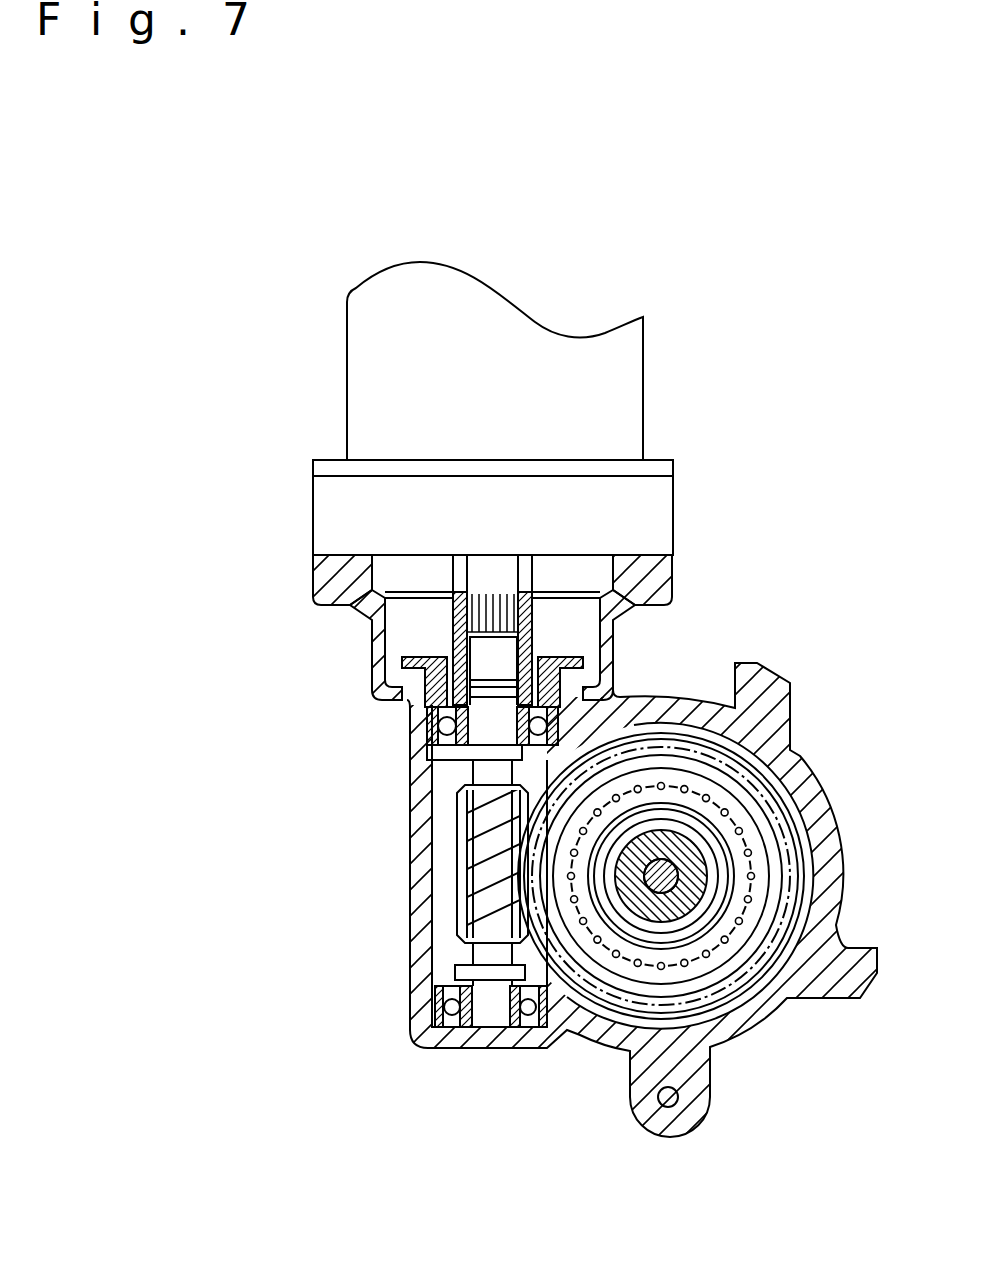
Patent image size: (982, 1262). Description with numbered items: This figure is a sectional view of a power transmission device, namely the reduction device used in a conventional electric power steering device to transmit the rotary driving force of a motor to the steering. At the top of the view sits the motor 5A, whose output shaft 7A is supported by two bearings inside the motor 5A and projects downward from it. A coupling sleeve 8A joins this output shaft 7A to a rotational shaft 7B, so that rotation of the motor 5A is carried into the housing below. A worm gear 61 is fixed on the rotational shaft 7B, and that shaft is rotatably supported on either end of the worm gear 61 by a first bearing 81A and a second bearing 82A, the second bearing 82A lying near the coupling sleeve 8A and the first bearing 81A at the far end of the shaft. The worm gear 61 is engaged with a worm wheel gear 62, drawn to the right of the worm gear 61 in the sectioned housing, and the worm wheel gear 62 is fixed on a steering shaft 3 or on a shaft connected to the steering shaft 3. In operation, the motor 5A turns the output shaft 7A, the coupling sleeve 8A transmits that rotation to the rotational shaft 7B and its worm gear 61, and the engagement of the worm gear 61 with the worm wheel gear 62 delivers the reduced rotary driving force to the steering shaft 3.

The motor 5A is at (373, 402).
The output shaft 7A is at (537, 620).
The rotational shaft 7B is at (493, 655).
The coupling sleeve 8A is at (457, 638).
The second bearing 82A is at (432, 733).
The worm gear 61 is at (480, 878).
The first bearing 81A is at (435, 1018).
The steering shaft 3 is at (697, 907).
The worm wheel gear 62 is at (687, 977).